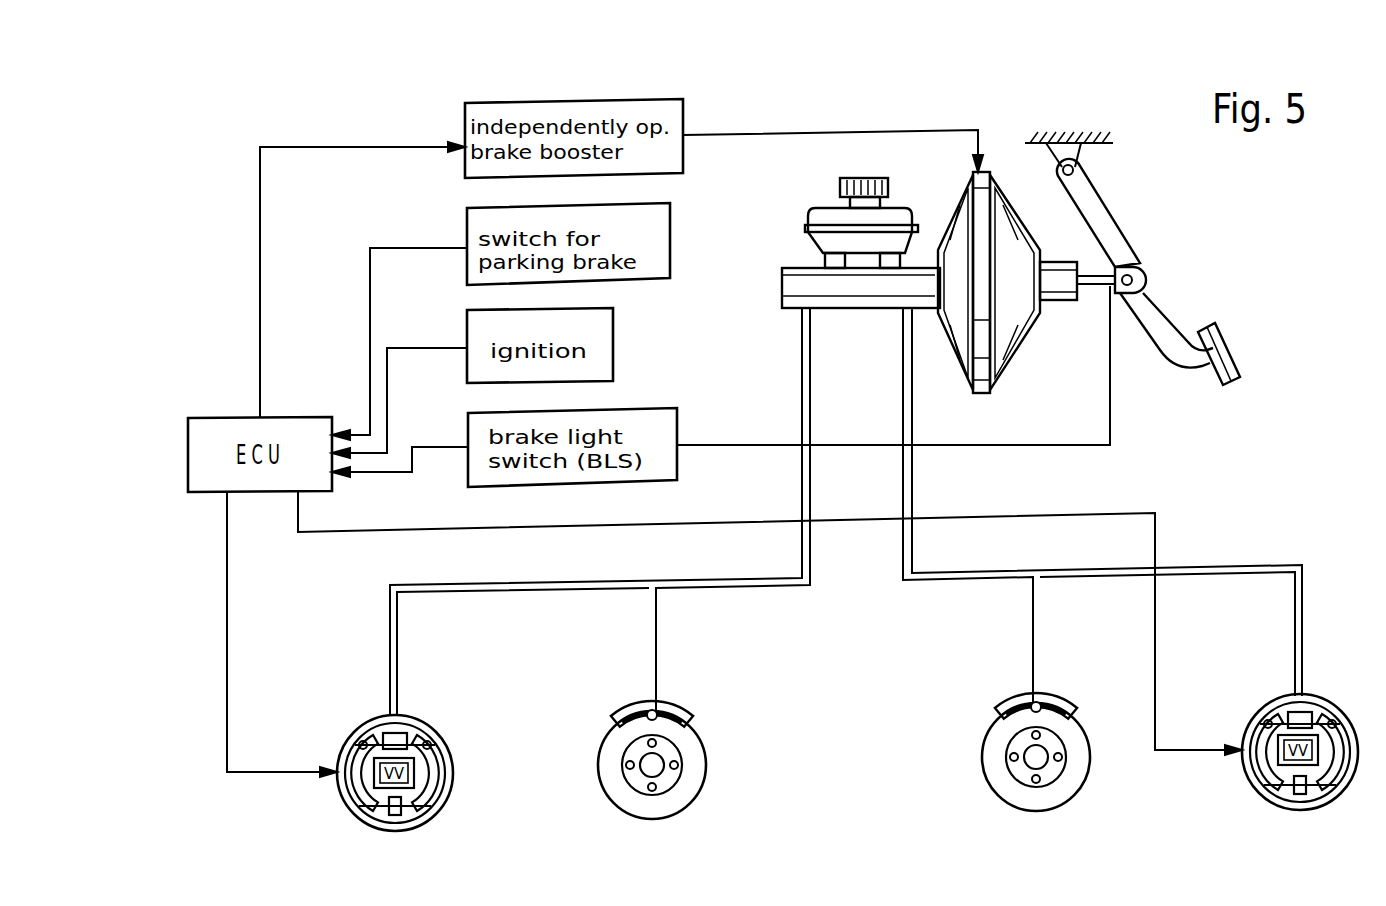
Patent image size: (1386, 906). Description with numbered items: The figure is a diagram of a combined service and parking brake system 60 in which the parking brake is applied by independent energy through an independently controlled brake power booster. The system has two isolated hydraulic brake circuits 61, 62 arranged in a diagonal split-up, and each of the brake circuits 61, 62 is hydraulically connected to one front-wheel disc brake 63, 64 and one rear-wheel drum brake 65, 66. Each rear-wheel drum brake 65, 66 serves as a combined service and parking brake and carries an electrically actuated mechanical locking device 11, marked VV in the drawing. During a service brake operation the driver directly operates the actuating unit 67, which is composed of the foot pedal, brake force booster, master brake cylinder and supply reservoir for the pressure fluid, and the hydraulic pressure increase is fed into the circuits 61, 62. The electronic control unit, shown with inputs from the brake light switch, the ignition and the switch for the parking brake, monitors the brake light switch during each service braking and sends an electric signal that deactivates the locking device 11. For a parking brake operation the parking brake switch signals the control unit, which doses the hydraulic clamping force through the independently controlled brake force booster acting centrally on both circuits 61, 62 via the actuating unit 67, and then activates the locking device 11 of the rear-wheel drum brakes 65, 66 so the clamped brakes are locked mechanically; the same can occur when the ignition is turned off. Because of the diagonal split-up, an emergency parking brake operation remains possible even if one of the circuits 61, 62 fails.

The combined service and parking brake system 60 is at (779, 120).
The actuating unit 67 is at (1005, 132).
The hydraulic brake circuit 61 is at (767, 587).
The hydraulic brake circuit 62 is at (975, 583).
The front-wheel disc brake 63 is at (693, 780).
The front-wheel disc brake 64 is at (993, 775).
The rear-wheel drum brake 65 is at (453, 793).
The rear-wheel drum brake 66 is at (1240, 768).
The mechanical locking device 11 is at (412, 781).